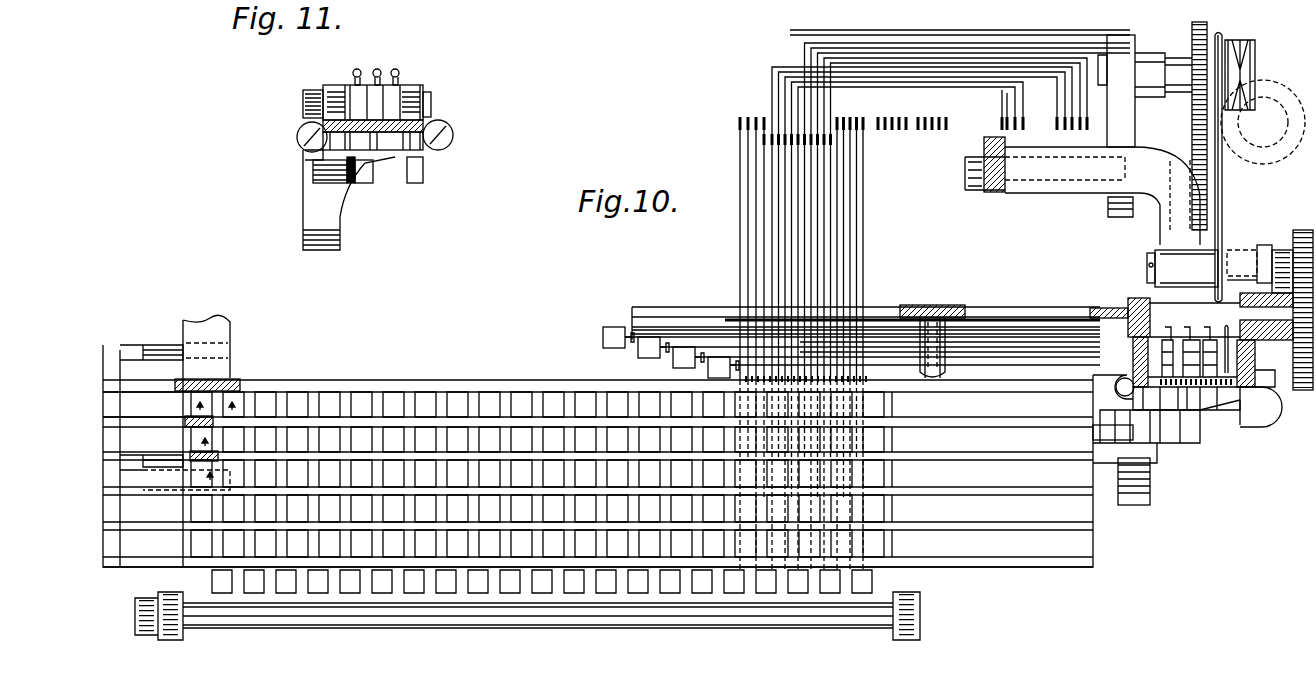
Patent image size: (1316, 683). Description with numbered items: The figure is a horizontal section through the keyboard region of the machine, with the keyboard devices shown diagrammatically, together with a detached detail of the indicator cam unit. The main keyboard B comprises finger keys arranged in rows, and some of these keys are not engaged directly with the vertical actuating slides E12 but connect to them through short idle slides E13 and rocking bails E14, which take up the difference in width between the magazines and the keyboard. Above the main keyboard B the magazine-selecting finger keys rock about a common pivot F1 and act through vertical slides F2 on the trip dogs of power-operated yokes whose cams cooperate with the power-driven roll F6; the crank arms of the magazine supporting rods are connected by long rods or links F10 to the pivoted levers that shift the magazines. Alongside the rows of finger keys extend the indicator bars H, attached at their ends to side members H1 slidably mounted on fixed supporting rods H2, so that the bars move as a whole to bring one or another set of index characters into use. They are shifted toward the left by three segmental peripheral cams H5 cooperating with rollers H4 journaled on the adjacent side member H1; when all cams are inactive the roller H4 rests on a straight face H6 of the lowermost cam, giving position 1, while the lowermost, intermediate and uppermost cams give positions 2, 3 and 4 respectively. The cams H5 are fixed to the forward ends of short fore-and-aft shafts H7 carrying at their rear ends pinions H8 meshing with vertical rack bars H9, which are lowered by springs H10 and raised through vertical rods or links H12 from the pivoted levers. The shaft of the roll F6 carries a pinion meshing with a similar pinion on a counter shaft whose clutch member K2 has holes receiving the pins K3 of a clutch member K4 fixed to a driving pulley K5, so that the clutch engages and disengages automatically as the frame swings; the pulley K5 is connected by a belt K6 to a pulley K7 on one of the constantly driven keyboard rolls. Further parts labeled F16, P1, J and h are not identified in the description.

In FIG. 10, the main keyboard B is at (865, 250).
In FIG. 10, the vertical actuating slides E12 is at (739, 121).
In FIG. 10, the short idle slides E13 is at (780, 140).
In FIG. 10, the rocking bails E14 is at (920, 48).
In FIG. 10, the common pivot F1 is at (930, 305).
In FIG. 10, the vertical slides F2 is at (1270, 380).
In FIG. 10, the power-driven roll F6 is at (1185, 308).
In FIG. 10, the long rods or links F10 is at (982, 192).
In FIG. 10, the shaft extension F16 is at (1166, 58).
In FIG. 10, the clutch member K2 is at (1298, 250).
In FIG. 10, the pins K3 is at (1262, 245).
In FIG. 10, the cooperating clutch member K4 is at (1236, 250).
In FIG. 10, the driving pulley K5 is at (1214, 266).
In FIG. 10, the belt K6 is at (1224, 197).
In FIG. 10, the pulley K7 is at (1215, 45).
In FIG. 10, the pulley P1 is at (1263, 122).
In FIG. 10, the pin J is at (1227, 336).
In FIG. 10, the indicator bars H is at (973, 418).
In FIG. 10, the side members H1 is at (118, 405).
In FIG. 10, the fixed supporting rods H2 is at (160, 350).
In FIG. 10, the rollers H4 is at (1108, 438).
In FIG. 11, the segmental peripheral cams H5 is at (368, 185).
In FIG. 10, the segmental peripheral cams H5 is at (1145, 418).
In FIG. 11, the straight face H6 is at (415, 177).
In FIG. 11, the short fore-and-aft shafts H7 is at (444, 126).
In FIG. 11, the pinions H8 is at (302, 104).
In FIG. 11, the vertical rack bars H9 is at (376, 100).
In FIG. 10, the vertical rack bars H9 is at (1188, 348).
In FIG. 11, the springs H10 is at (395, 70).
In FIG. 10, the vertical rods or links H12 is at (1193, 380).
In FIG. 10, the comb teeth h is at (235, 380).
In FIG. 10, the No. 1 position 1 is at (618, 337).
In FIG. 10, the No. 2 position 2 is at (653, 347).
In FIG. 10, the No. 3 position 3 is at (688, 357).
In FIG. 10, the No. 4 position 4 is at (723, 367).